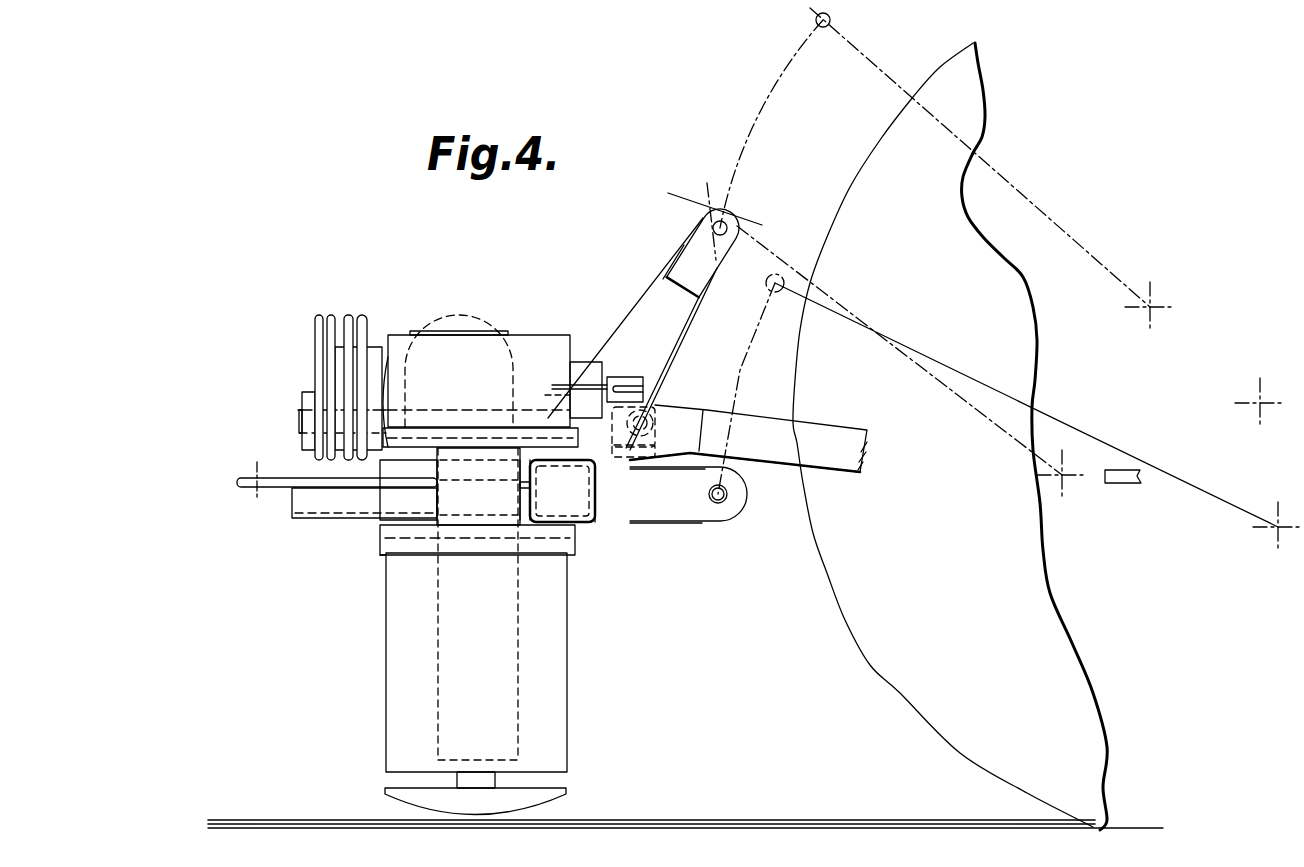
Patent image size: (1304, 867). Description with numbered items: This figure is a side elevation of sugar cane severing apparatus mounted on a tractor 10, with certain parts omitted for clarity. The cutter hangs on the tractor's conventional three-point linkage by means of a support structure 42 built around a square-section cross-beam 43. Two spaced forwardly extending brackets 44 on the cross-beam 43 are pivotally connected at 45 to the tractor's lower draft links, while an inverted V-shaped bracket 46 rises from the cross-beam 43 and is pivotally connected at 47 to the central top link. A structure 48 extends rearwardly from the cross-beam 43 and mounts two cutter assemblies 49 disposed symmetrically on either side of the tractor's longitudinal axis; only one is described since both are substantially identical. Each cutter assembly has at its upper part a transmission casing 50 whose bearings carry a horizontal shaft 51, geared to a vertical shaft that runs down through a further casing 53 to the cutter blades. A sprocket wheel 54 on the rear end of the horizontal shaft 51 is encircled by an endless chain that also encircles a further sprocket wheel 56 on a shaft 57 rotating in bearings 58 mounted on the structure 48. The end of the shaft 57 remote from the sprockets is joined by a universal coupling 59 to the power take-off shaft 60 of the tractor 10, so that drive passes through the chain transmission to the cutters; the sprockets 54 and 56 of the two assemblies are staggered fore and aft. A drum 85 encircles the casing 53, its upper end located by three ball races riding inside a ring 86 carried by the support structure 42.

The tractor 10 is at (870, 617).
The support structure 42 is at (600, 532).
The cross-beam 43 is at (585, 522).
The brackets 44 is at (667, 510).
The pivotal connection 45 is at (723, 503).
The inverted V-shaped bracket 46 is at (651, 299).
The pivotal connection 47 is at (728, 214).
The structure 48 is at (343, 460).
The cutter assembly 49 is at (377, 572).
The transmission casing 50 is at (510, 352).
The horizontal shaft 51 is at (613, 377).
The casing 53 is at (447, 492).
The sprocket wheel 54 is at (330, 322).
The sprocket wheel 56 is at (330, 462).
The shaft 57 is at (338, 418).
The bearings 58 is at (430, 354).
The universal coupling 59 is at (647, 421).
The power take-off shaft 60 is at (755, 427).
The drum 85 is at (548, 672).
The ring 86 is at (413, 552).